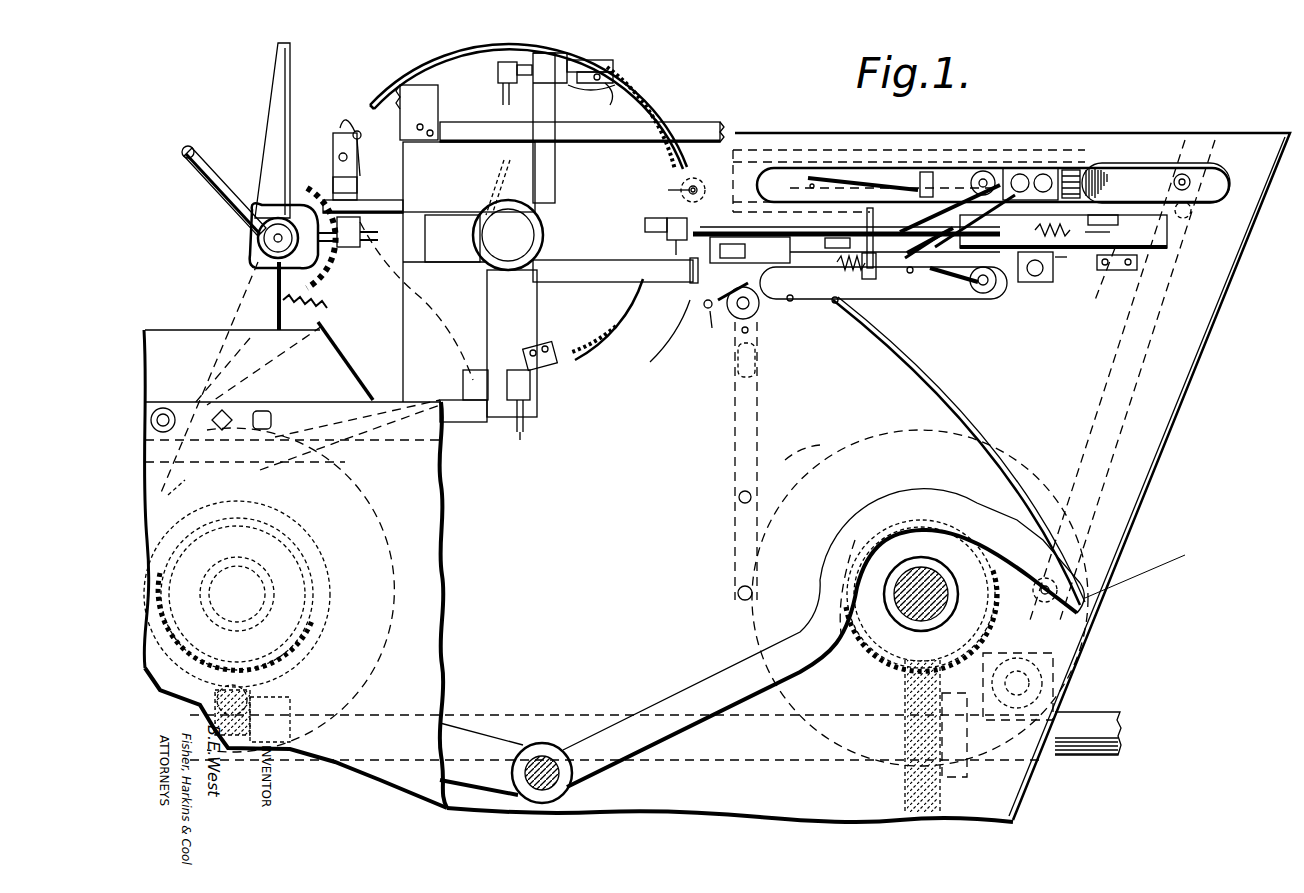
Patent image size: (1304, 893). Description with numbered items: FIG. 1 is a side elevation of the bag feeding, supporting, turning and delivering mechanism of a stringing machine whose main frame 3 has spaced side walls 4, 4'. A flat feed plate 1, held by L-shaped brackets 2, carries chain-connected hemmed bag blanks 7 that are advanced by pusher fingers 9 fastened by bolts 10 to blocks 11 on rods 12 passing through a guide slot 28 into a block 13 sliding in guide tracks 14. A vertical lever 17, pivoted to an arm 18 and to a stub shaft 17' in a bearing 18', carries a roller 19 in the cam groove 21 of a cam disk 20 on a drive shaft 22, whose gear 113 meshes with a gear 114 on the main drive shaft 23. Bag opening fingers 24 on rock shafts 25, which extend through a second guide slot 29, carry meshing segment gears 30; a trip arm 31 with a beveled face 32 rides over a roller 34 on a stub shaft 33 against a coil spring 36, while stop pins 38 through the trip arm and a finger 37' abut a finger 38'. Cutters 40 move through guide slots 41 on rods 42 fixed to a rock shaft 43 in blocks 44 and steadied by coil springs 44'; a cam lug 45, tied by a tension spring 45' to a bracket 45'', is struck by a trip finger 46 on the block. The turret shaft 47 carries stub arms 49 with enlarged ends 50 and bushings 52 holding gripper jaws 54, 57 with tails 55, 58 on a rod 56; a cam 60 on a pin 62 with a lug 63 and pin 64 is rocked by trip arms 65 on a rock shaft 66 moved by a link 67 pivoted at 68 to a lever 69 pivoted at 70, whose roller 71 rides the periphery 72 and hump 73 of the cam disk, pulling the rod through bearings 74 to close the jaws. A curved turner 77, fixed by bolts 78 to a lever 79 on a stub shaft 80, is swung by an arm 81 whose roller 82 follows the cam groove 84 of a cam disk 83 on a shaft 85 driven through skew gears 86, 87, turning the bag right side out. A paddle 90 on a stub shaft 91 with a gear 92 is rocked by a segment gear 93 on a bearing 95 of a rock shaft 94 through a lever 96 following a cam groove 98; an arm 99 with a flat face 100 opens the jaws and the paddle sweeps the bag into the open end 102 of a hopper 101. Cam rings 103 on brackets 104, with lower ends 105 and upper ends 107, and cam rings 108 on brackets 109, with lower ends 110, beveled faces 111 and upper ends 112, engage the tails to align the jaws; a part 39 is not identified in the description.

The feed plate 1 is at (930, 233).
The L-shaped brackets 2 is at (946, 278).
The main machine frame 3 is at (1190, 400).
The side wall 4 is at (578, 576).
The side wall 4' is at (475, 516).
The bag blanks 7 is at (412, 292).
The bag pusher fingers 9 is at (1066, 168).
The bolts 10 is at (1075, 144).
The blocks 11 is at (1075, 160).
The rods 12 is at (1030, 193).
The block 13 is at (985, 170).
The guide tracks 14 is at (865, 148).
The vertical lever 17 is at (1122, 380).
The stub shaft 17' is at (1060, 686).
The arm 18 is at (1201, 229).
The bearing 18' is at (1066, 684).
The roller 19 is at (1085, 607).
The cam disk 20 is at (852, 445).
The cam groove 21 is at (1005, 495).
The horizontal drive shaft 22 is at (940, 620).
The main longitudinal drive shaft 23 is at (745, 762).
The bag opening finger 24 is at (928, 285).
The rock shafts 25 is at (1010, 175).
The guide slot 28 is at (762, 178).
The second guide slot 29 is at (797, 313).
The segment gears 30 is at (1097, 220).
The trip arm 31 is at (828, 172).
The beveled bottom face 32 is at (791, 185).
The stub shaft 33 is at (697, 190).
The roller 34 is at (662, 190).
The coil spring 36 is at (922, 172).
The finger 37' is at (883, 280).
The stop pins 38 is at (950, 218).
The finger 38' is at (975, 176).
The slot 39 is at (895, 195).
The bag cutters 40 is at (866, 213).
The guide slots 41 is at (834, 240).
The rods 42 is at (836, 305).
The rock shaft 43 is at (1037, 279).
The blocks 44 is at (1073, 276).
The coil springs 44' is at (822, 274).
The cam lug 45 is at (1086, 251).
The tension spring 45' is at (1076, 237).
The bracket 45'' is at (1122, 274).
The trip finger 46 is at (1192, 195).
The shaft 47 is at (525, 232).
The stub arms 49 is at (562, 163).
The rounded outer ends 50 is at (521, 279).
The bushings 52 is at (478, 450).
The bottom gripping jaw 54 is at (505, 105).
The tail 55 is at (330, 212).
The rod 56 is at (340, 140).
The top gripping jaw 57 is at (500, 92).
The tail 58 is at (538, 390).
The cam 60 is at (358, 165).
The pin 62 is at (340, 156).
The lug 63 is at (360, 140).
The pin 64 is at (362, 135).
The trip arms 65 is at (740, 260).
The rock shaft 66 is at (755, 315).
The link 67 is at (760, 350).
The pivot 68 is at (758, 370).
The lever 69 is at (733, 412).
The pivot 70 is at (738, 497).
The roller 71 is at (737, 595).
The periphery 72 is at (905, 430).
The hump 73 is at (794, 446).
The bearings 74 is at (358, 185).
The turner member 77 is at (948, 380).
The bolts 78 is at (1110, 572).
The lever 79 is at (668, 700).
The stub shaft 80 is at (548, 755).
The arm 81 is at (470, 735).
The roller 82 is at (210, 686).
The cam disk 83 is at (360, 500).
The cam groove 84 is at (312, 640).
The horizontal drive shaft 85 is at (240, 580).
The skew gear 86 is at (317, 582).
The skew gear 87 is at (160, 578).
The paddle 90 is at (275, 78).
The stub shaft 91 is at (265, 243).
The gear 92 is at (262, 242).
The segment gear 93 is at (305, 300).
The rock shaft 94 is at (293, 378).
The bearing 95 is at (262, 262).
The lever 96 is at (165, 480).
The cam groove 98 is at (215, 502).
The arm 99 is at (208, 185).
The flat face 100 is at (190, 150).
The bag hopper 101 is at (244, 361).
The open inner end 102 is at (345, 362).
The cam rings 103 is at (652, 118).
The brackets 104 is at (435, 75).
The lower ends 105 is at (669, 180).
The upper ends 107 is at (378, 98).
The cam rings 108 is at (582, 345).
The brackets 109 is at (572, 319).
The lower ends 110 is at (521, 440).
The beveled faces 111 is at (609, 341).
The upper ends 112 is at (615, 245).
The gear 113 is at (910, 602).
The gear 114 is at (945, 795).